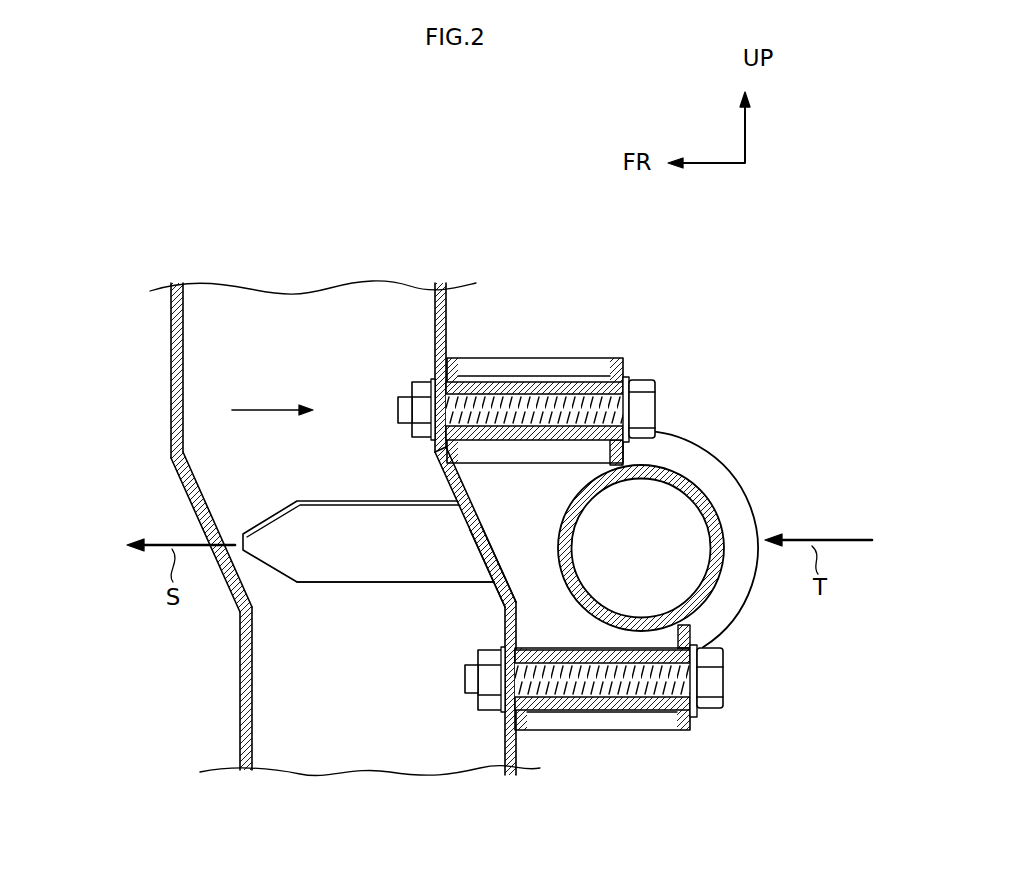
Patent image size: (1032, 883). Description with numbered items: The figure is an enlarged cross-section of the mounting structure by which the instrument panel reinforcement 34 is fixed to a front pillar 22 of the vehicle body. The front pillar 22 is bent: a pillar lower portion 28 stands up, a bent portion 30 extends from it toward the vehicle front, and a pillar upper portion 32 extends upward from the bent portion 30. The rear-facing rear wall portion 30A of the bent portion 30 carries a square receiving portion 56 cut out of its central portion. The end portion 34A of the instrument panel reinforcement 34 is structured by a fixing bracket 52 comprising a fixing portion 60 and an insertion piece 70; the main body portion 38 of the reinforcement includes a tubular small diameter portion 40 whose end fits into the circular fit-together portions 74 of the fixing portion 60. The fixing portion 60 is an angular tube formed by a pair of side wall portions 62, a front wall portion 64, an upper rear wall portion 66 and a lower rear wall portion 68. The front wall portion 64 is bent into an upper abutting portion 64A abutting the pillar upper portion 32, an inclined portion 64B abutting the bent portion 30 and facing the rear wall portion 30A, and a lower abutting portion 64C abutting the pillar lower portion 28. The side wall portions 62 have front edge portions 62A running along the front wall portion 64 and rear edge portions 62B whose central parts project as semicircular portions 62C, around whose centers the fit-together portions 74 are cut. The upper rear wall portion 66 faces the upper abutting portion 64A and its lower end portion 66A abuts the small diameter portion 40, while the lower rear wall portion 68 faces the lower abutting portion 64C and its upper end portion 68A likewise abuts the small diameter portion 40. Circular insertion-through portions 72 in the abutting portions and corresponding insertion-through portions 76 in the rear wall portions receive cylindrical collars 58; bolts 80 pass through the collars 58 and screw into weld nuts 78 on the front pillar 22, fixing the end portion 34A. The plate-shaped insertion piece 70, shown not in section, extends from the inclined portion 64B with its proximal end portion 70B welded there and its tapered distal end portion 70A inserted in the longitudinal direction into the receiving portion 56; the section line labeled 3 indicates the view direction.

The front pillar 22 is at (155, 512).
The pillar upper portion 32 is at (170, 386).
The bent portion 30 is at (186, 497).
The rear wall portion 30A is at (448, 490).
The pillar lower portion 28 is at (238, 678).
The section view direction arrow 3 is at (270, 410).
The fixing bracket 52 is at (528, 527).
The insertion piece 70 is at (354, 561).
The distal end portion 70A is at (285, 535).
The proximal end portion 70B is at (470, 538).
The front wall portion 64 is at (507, 529).
The upper abutting portion 64A is at (455, 365).
The inclined portion 64B is at (472, 488).
The receiving portion 56 is at (488, 568).
The lower abutting portion 64C is at (517, 630).
The main body portion 38 is at (677, 521).
The small diameter portion 40 is at (677, 521).
The fit-together portion 74 is at (722, 556).
The instrument panel reinforcement 34 is at (578, 527).
The end portion 34A is at (578, 527).
The fixing portion 60 is at (565, 356).
The side wall portion 62 is at (572, 356).
The edge portion 62A is at (621, 732).
The edge portion 62B is at (665, 722).
The semicircular portion 62C is at (745, 515).
The upper rear wall portion 66 is at (544, 459).
The end portion 66A is at (610, 450).
The lower rear wall portion 68 is at (759, 640).
The end portion 68A is at (690, 634).
The collar 58 is at (510, 385).
The insertion-through portion 72 is at (437, 393).
The weld nut 78 is at (423, 410).
The bolt 80 is at (650, 388).
The insertion-through portion 76 is at (627, 385).